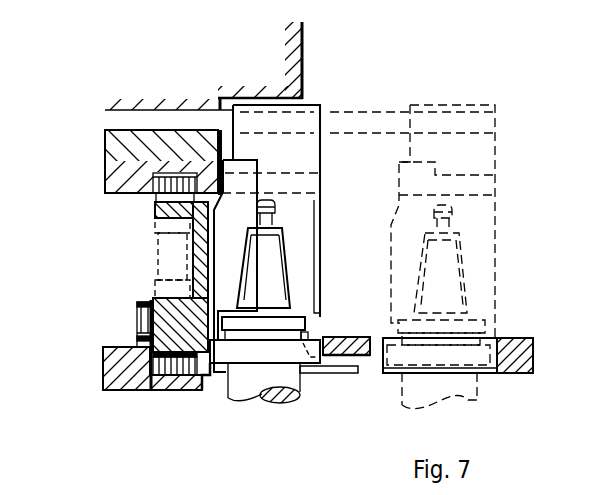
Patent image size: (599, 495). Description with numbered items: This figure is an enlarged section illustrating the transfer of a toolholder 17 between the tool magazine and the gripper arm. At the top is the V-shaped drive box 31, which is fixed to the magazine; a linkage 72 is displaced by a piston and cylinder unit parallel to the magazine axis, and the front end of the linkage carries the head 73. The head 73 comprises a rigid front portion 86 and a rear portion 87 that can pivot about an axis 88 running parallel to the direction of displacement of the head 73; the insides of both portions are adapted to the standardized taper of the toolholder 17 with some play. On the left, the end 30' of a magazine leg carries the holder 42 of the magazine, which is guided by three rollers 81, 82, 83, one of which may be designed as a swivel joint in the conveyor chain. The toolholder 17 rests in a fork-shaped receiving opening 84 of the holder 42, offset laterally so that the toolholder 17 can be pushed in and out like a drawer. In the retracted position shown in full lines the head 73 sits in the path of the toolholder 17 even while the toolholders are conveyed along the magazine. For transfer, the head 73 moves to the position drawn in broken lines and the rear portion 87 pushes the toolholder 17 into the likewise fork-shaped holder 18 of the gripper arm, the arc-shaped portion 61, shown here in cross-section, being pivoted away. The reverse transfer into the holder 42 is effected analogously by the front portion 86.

The toolholder 17 is at (257, 352).
The holder of the gripper arm 18 is at (513, 340).
The end of magazine leg 30' is at (122, 260).
The drive box 31 is at (293, 50).
The holder of the magazine 42 is at (170, 310).
The arc-shaped portion 61 is at (340, 338).
The linkage 72 is at (152, 112).
The head 73 is at (346, 201).
The roller 81 is at (170, 194).
The roller 82 is at (145, 322).
The roller 83 is at (168, 376).
The fork-shaped receiving opening 84 is at (317, 374).
The rigid front portion 86 is at (313, 241).
The rear portion 87 is at (225, 251).
The axis 88 is at (323, 190).